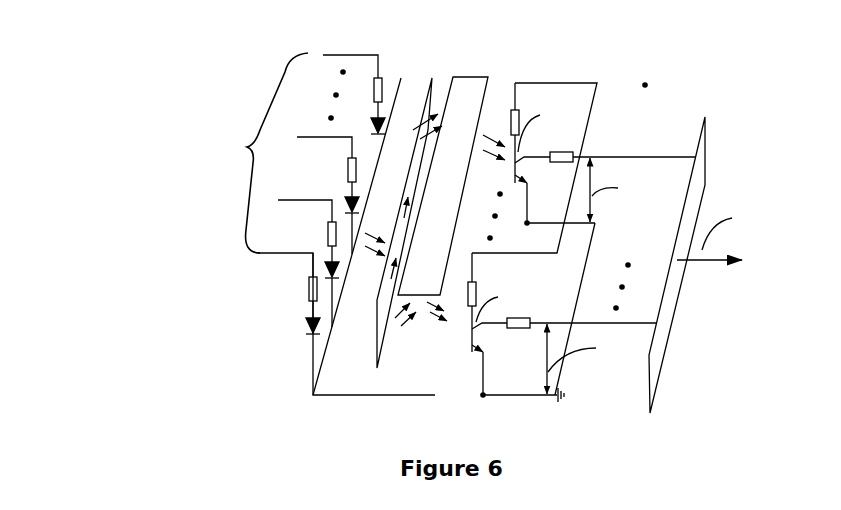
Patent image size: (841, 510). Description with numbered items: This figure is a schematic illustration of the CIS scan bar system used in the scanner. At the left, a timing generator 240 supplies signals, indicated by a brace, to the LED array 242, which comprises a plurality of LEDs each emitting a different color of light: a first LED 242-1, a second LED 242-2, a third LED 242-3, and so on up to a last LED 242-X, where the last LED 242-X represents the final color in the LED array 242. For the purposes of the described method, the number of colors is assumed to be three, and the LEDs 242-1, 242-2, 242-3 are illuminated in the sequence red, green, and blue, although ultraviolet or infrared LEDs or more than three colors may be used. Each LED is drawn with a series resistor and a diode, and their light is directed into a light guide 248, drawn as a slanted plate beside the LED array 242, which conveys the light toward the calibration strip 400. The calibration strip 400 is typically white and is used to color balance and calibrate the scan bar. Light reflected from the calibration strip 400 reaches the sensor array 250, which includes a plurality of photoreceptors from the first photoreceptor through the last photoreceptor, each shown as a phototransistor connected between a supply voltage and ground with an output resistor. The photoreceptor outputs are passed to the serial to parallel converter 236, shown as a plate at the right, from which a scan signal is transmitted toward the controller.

The serial to parallel converter 236 is at (708, 117).
The timing generator 240 is at (202, 153).
The LED array 242 is at (262, 314).
The first LED 242-1 is at (313, 324).
The second LED 242-2 is at (332, 268).
The third LED 242-3 is at (352, 209).
The last LED 242-X is at (380, 130).
The light guide 248 is at (376, 334).
The sensor array 250 is at (564, 76).
The calibration strip 400 is at (462, 77).